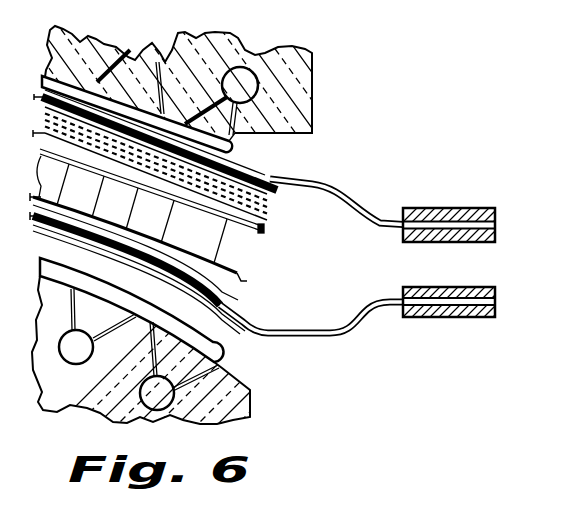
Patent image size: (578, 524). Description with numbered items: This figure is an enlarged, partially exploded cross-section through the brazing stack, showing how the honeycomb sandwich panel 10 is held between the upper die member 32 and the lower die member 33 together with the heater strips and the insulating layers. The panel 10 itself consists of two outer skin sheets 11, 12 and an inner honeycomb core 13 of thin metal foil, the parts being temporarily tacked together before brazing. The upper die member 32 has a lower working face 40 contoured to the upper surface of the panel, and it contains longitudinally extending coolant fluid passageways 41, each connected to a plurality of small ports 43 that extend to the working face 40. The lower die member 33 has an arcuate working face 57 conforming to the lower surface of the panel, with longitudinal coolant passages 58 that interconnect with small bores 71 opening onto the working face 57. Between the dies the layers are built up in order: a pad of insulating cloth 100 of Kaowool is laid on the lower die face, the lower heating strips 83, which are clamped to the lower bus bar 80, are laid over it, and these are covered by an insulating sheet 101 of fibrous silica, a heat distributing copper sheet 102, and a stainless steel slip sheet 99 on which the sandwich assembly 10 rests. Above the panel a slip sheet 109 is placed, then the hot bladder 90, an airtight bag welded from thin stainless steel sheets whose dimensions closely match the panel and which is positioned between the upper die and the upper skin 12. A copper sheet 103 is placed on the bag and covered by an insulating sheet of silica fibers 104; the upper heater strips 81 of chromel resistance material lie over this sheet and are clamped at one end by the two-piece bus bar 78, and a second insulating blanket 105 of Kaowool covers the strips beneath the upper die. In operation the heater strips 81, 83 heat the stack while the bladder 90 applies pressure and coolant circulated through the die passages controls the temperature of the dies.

The honeycomb sandwich panel 10 is at (240, 248).
The outer skin sheet 11 is at (230, 282).
The upper skin sheet 12 is at (263, 228).
The inner honeycomb core 13 is at (194, 232).
The upper die member 32 is at (316, 66).
The lower die member 33 is at (258, 412).
The lower working face 40 is at (75, 52).
The coolant fluid passageways 41 is at (233, 67).
The small ports 43 is at (262, 133).
The arcuate working face 57 is at (223, 373).
The coolant passages 58 is at (170, 406).
The small bores 71 is at (222, 366).
The bus bar 78 is at (472, 208).
The lower bus bar 80 is at (458, 318).
The heater strips 81 is at (347, 186).
The lower heating strips 83 is at (346, 324).
The hot bladder 90 is at (262, 212).
The slip sheet 99 is at (132, 228).
The insulating cloth pad 100 is at (226, 341).
The insulating sheet 101 is at (257, 311).
The heat distributing sheet 102 is at (258, 305).
The copper sheet 103 is at (302, 193).
The insulating sheet of silica fibers 104 is at (288, 184).
The second insulating blanket 105 is at (50, 77).
The slip sheet 109 is at (305, 213).